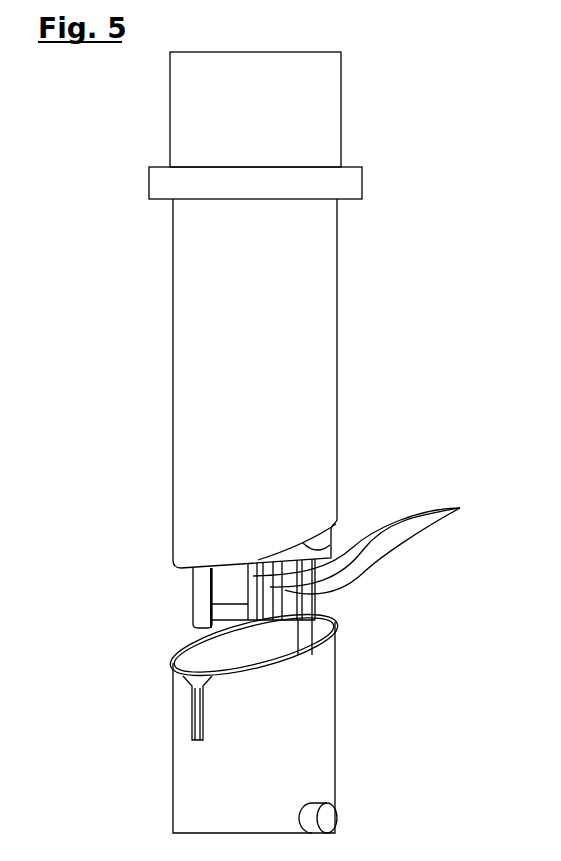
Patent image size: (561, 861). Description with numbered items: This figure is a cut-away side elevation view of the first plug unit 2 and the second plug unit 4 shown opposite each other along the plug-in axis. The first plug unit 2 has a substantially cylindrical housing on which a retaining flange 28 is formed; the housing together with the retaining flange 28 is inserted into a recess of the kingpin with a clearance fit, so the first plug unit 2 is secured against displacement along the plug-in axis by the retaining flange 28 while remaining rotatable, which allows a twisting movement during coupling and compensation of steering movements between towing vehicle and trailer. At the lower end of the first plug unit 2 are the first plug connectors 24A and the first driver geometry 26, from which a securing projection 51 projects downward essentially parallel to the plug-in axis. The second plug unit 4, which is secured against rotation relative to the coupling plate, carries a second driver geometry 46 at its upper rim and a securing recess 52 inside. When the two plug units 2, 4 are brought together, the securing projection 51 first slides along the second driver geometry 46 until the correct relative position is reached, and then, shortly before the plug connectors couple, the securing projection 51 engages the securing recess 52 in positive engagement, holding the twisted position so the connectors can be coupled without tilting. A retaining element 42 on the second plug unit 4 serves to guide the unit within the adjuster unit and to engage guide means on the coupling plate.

The first plug unit 2 is at (358, 327).
The retaining flange 28 is at (352, 180).
The securing projection 51 is at (193, 593).
The first driver geometry 26 is at (337, 536).
The first plug connectors 24A is at (398, 542).
The second plug unit 4 is at (368, 733).
The second driver geometry 46 is at (330, 623).
The securing recess 52 is at (195, 726).
The retaining element 42 is at (330, 817).